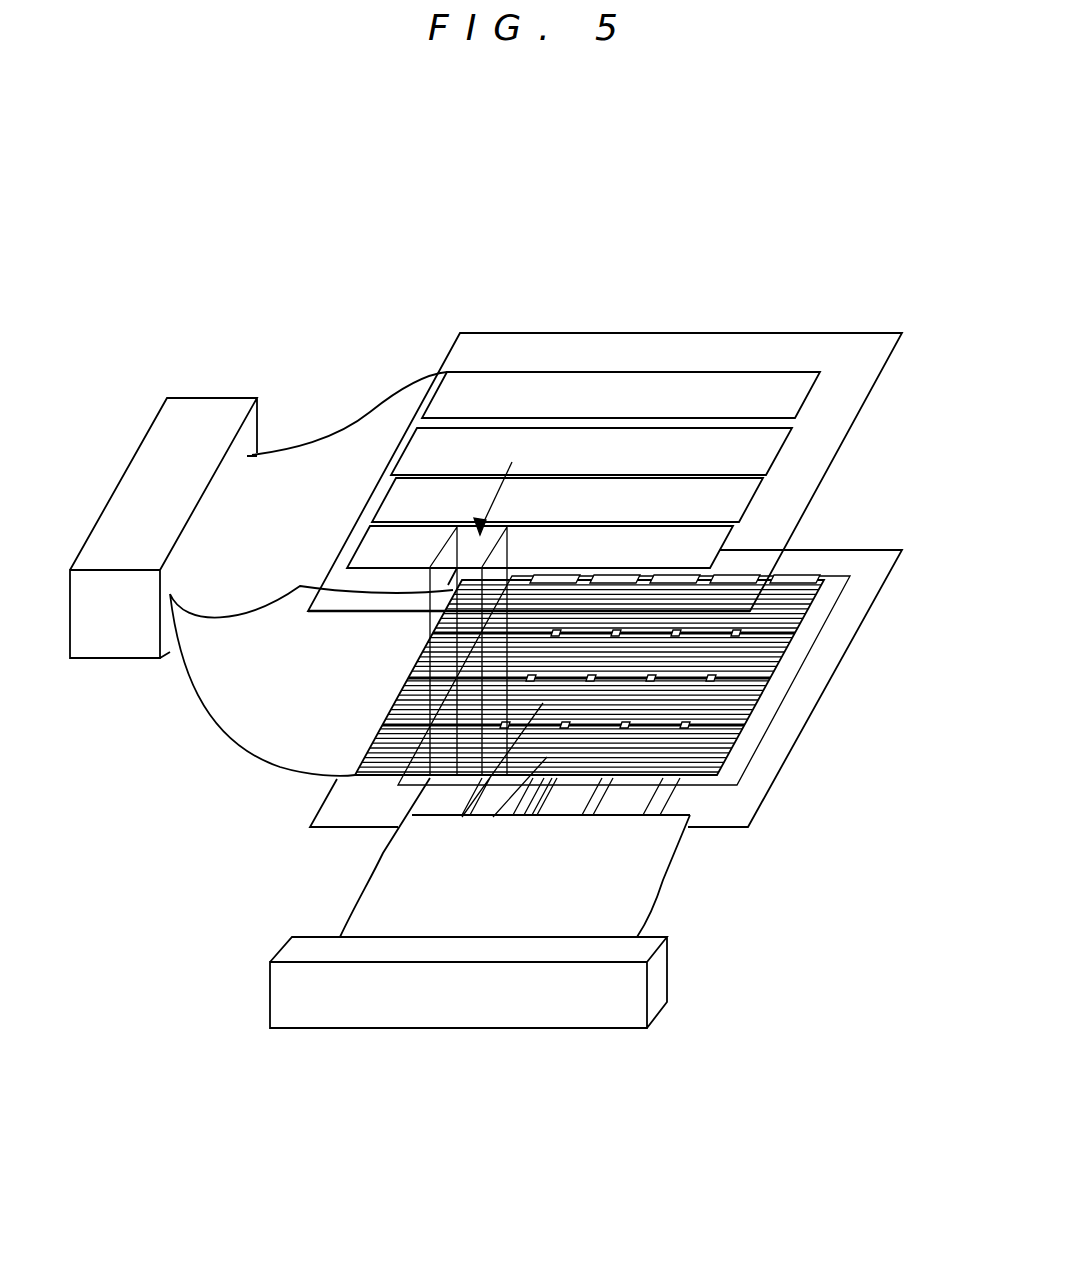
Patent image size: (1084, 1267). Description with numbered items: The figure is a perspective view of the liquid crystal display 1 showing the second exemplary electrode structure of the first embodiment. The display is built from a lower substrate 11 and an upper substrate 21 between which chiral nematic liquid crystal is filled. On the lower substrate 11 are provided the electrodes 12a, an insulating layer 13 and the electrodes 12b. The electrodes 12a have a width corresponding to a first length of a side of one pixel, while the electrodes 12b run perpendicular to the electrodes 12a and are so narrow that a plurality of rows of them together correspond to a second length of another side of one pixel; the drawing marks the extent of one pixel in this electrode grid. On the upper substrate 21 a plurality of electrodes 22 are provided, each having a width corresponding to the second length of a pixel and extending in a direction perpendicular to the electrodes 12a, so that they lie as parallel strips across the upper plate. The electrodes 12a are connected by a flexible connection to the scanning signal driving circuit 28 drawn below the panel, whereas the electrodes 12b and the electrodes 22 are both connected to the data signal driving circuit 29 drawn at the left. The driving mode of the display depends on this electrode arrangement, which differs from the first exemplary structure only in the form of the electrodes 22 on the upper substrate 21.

The liquid crystal display 1 is at (533, 257).
The lower substrate 11 is at (787, 760).
The electrodes 12a is at (613, 802).
The electrodes 12b is at (510, 800).
The insulating layer 13 is at (797, 680).
The upper substrate 21 is at (658, 333).
The electrodes 22 is at (738, 448).
The scanning signal driving circuit 28 is at (557, 997).
The data signal driving circuit 29 is at (200, 397).